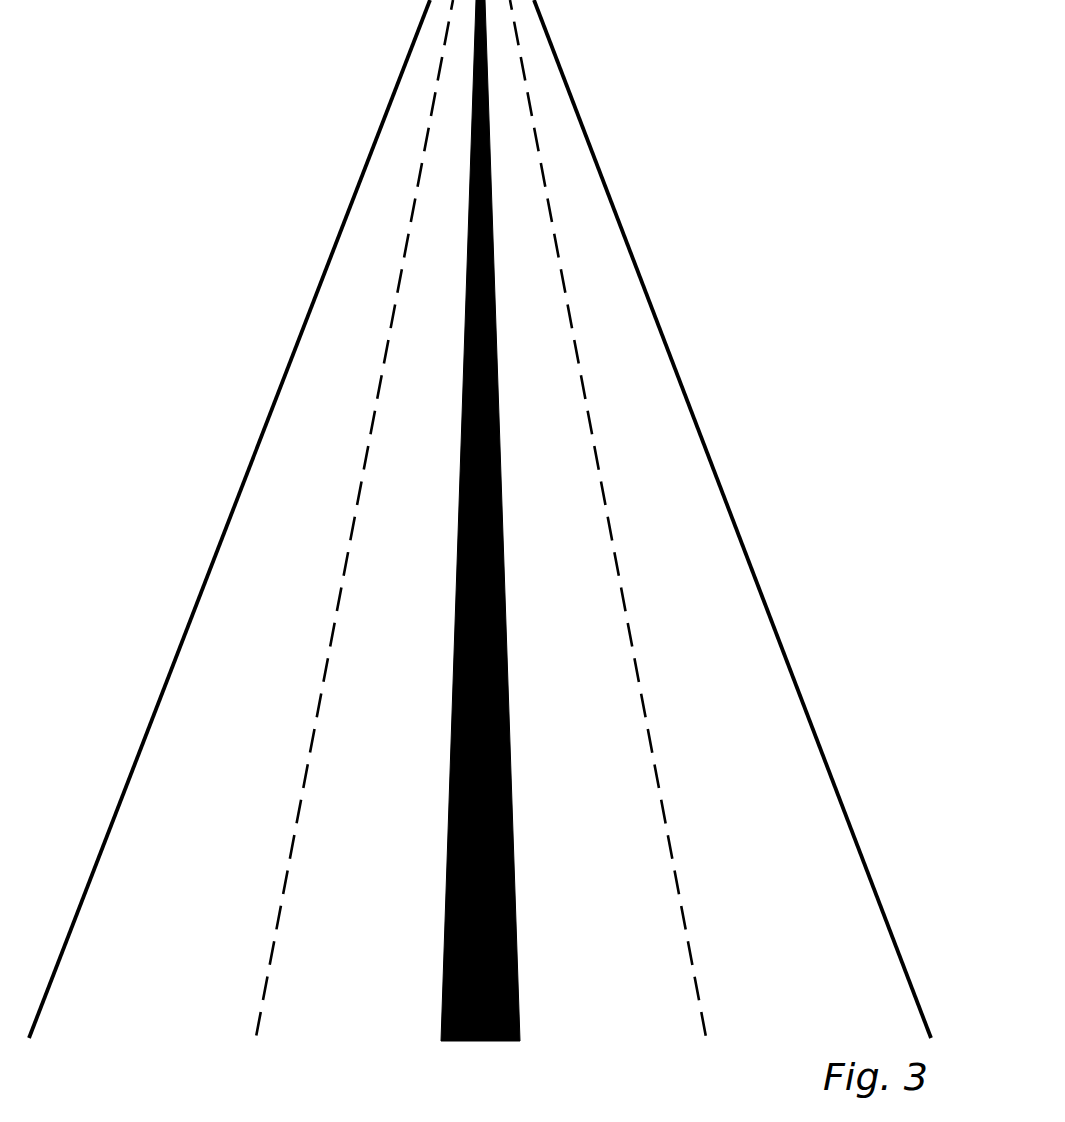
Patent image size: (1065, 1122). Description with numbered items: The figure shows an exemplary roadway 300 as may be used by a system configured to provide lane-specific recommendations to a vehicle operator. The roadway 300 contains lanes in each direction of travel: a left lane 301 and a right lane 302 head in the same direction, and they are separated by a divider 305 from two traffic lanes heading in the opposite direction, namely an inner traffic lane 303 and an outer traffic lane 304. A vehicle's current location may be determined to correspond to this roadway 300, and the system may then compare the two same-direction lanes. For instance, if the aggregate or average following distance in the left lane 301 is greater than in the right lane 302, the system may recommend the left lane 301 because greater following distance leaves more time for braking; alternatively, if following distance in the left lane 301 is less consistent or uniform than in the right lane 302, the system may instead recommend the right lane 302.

The roadway 300 is at (761, 44).
The left lane 301 is at (620, 999).
The right lane 302 is at (817, 999).
The inner traffic lane 303 is at (395, 826).
The outer traffic lane 304 is at (226, 826).
The divider 305 is at (515, 1079).